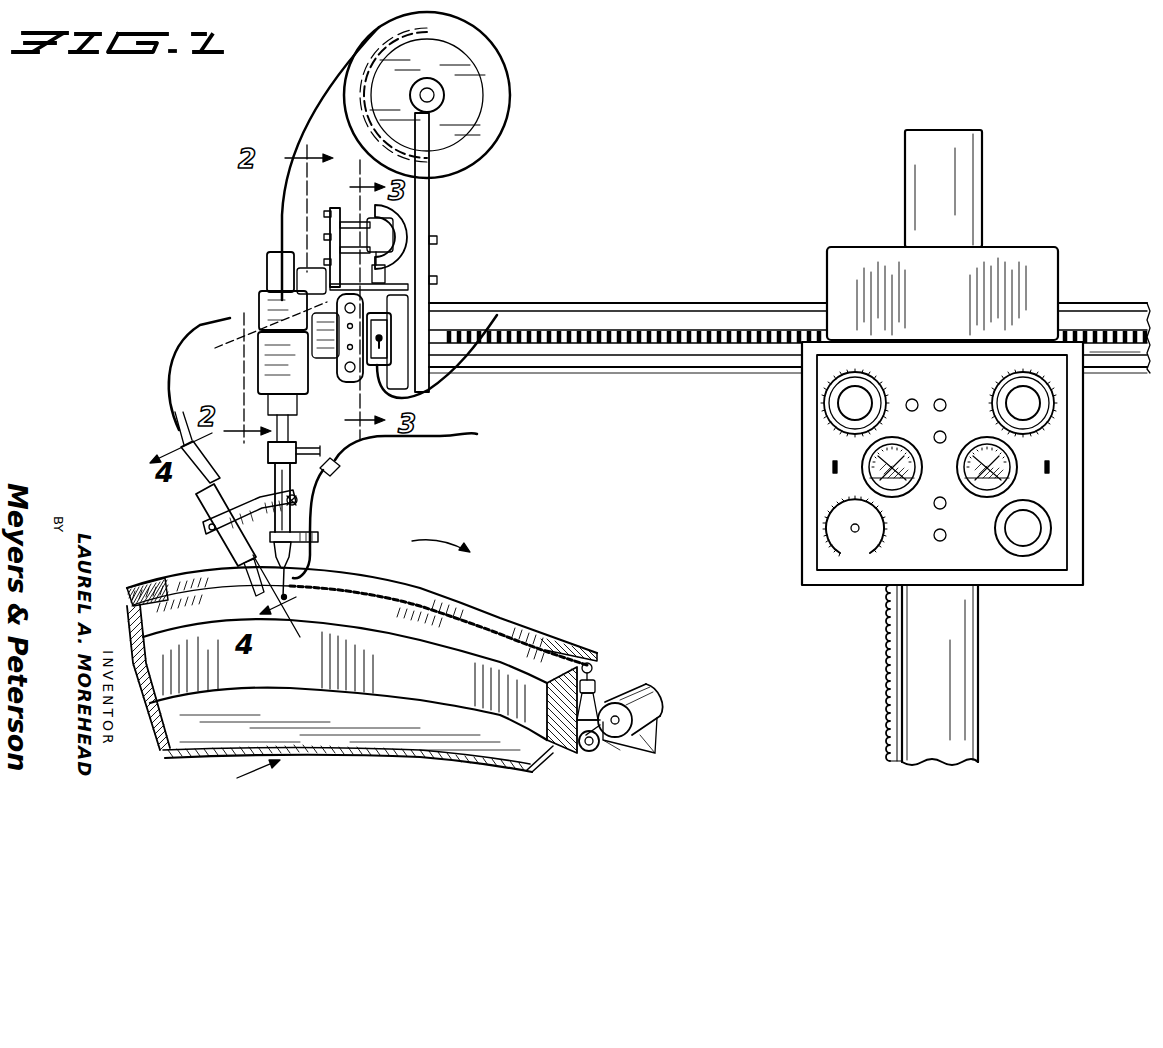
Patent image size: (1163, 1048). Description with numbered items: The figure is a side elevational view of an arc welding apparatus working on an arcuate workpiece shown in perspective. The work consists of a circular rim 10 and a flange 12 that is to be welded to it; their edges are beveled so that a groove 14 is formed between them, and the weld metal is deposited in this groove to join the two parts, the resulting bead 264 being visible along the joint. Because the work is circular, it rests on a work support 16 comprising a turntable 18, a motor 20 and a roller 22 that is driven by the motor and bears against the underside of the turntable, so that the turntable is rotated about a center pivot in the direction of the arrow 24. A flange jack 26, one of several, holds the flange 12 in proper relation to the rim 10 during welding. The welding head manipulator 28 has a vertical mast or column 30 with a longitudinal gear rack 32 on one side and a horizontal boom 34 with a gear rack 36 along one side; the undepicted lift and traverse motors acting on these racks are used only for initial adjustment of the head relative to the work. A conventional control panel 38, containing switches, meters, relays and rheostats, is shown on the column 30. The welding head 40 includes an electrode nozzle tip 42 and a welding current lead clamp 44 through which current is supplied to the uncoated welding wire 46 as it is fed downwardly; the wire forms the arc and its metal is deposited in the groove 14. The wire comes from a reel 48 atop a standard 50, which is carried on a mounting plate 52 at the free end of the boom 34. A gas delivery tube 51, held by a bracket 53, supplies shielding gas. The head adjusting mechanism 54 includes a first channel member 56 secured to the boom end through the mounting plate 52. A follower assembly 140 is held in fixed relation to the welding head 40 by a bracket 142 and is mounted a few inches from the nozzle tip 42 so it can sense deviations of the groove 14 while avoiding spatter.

The circular rim 10 is at (525, 715).
The flange 12 is at (566, 631).
The groove 14 is at (168, 597).
The work support 16 is at (240, 774).
The turntable 18 is at (178, 730).
The motor 20 is at (662, 697).
The roller 22 is at (582, 748).
The arrow 24 is at (441, 533).
The flange jack 26 is at (596, 688).
The welding head manipulator 28 is at (1080, 298).
The vertical mast or column 30 is at (983, 660).
The gear rack 32 is at (889, 692).
The horizontal boom 34 is at (603, 300).
The gear rack 36 is at (705, 368).
The control panel 38 is at (1085, 525).
The welding head 40 is at (257, 375).
The electrode nozzle tip 42 is at (294, 556).
The welding current lead clamp 44 is at (294, 446).
The welding wire 46 is at (280, 203).
The reel 48 is at (503, 97).
The standard 50 is at (436, 222).
The gas delivery tube 51 is at (325, 498).
The mounting plate 52 is at (455, 315).
The bracket 53 is at (318, 536).
The head adjusting mechanism 54 is at (339, 202).
The first channel member 56 is at (430, 394).
The follower assembly 140 is at (186, 495).
The bracket 142 is at (208, 524).
The bead 264 is at (462, 612).